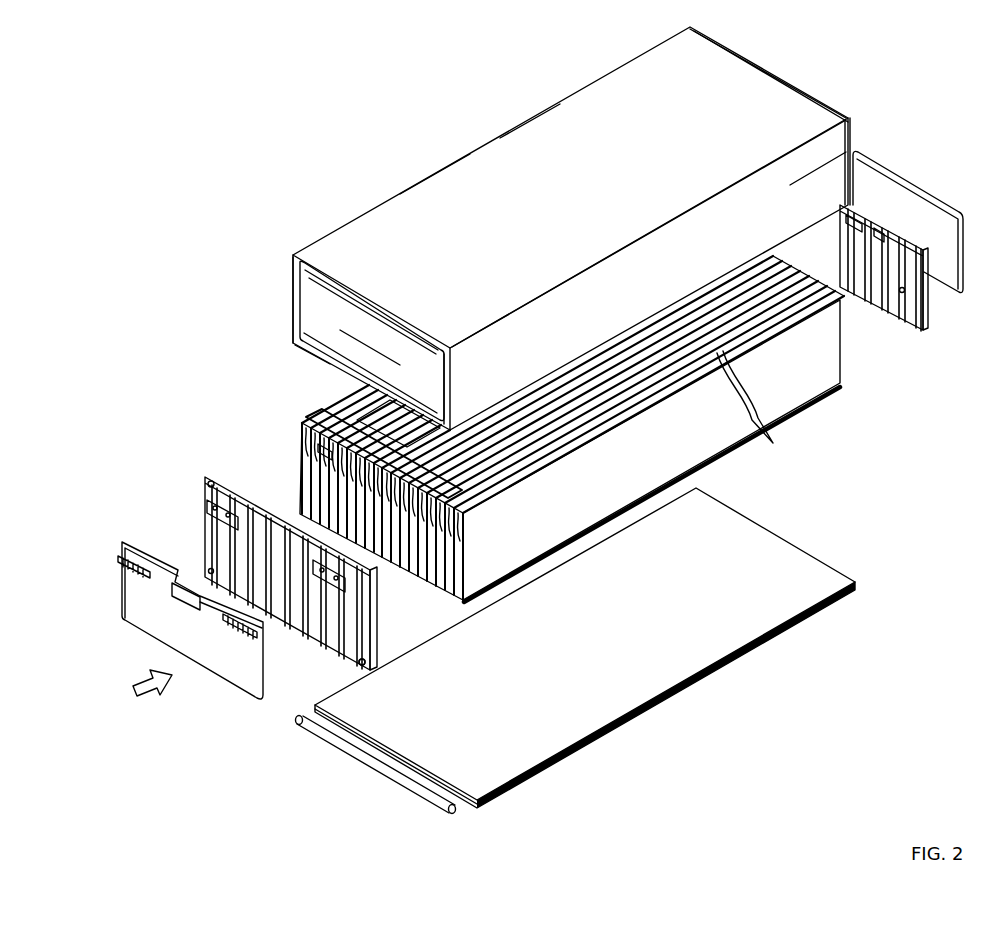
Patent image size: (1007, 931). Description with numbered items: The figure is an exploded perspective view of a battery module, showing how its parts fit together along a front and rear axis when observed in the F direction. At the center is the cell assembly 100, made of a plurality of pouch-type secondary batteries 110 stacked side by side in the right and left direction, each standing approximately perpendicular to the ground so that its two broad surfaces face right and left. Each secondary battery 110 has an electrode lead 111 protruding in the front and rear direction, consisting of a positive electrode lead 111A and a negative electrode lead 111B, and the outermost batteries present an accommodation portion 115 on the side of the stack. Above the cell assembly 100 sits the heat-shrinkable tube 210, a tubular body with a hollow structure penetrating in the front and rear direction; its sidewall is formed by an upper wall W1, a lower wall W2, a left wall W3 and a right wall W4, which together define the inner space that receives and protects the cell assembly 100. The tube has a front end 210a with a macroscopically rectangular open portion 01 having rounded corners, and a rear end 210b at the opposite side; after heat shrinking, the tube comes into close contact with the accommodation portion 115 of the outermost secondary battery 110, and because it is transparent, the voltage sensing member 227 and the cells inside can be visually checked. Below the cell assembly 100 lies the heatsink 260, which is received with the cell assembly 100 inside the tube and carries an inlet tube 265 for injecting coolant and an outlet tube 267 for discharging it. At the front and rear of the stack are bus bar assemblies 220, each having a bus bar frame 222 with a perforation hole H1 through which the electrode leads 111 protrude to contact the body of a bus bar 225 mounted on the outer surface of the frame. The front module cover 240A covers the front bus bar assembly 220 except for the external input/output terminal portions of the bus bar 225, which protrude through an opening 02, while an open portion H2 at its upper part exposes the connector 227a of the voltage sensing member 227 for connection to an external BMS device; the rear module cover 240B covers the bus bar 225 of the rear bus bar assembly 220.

The cell assembly 100 is at (584, 437).
The pouch-type secondary battery 110 is at (763, 403).
The electrode lead 111 is at (622, 437).
The positive electrode lead 111A is at (421, 570).
The negative electrode lead 111B is at (843, 338).
The accommodation portion 115 is at (697, 445).
The heat-shrinkable tube 210 is at (360, 212).
The front end 210a is at (291, 257).
The rear end 210b is at (772, 67).
The bus bar assembly 220 is at (568, 437).
The bus bar frame 222 is at (365, 643).
The bus bar 225 is at (220, 542).
The voltage sensing member 227 is at (345, 418).
The connector 227a is at (318, 452).
The module cover 240A is at (154, 621).
The module cover 240B is at (927, 193).
The heatsink 260 is at (569, 653).
The inlet tube 265 is at (302, 730).
The outlet tube 267 is at (445, 807).
The open portion 01 is at (378, 338).
The opening 02 is at (120, 556).
The perforation hole H1 is at (323, 620).
The open portion H2 is at (172, 596).
The upper wall W1 is at (523, 157).
The lower wall W2 is at (313, 362).
The left wall W3 is at (435, 172).
The right wall W4 is at (823, 162).
The F direction F is at (147, 680).